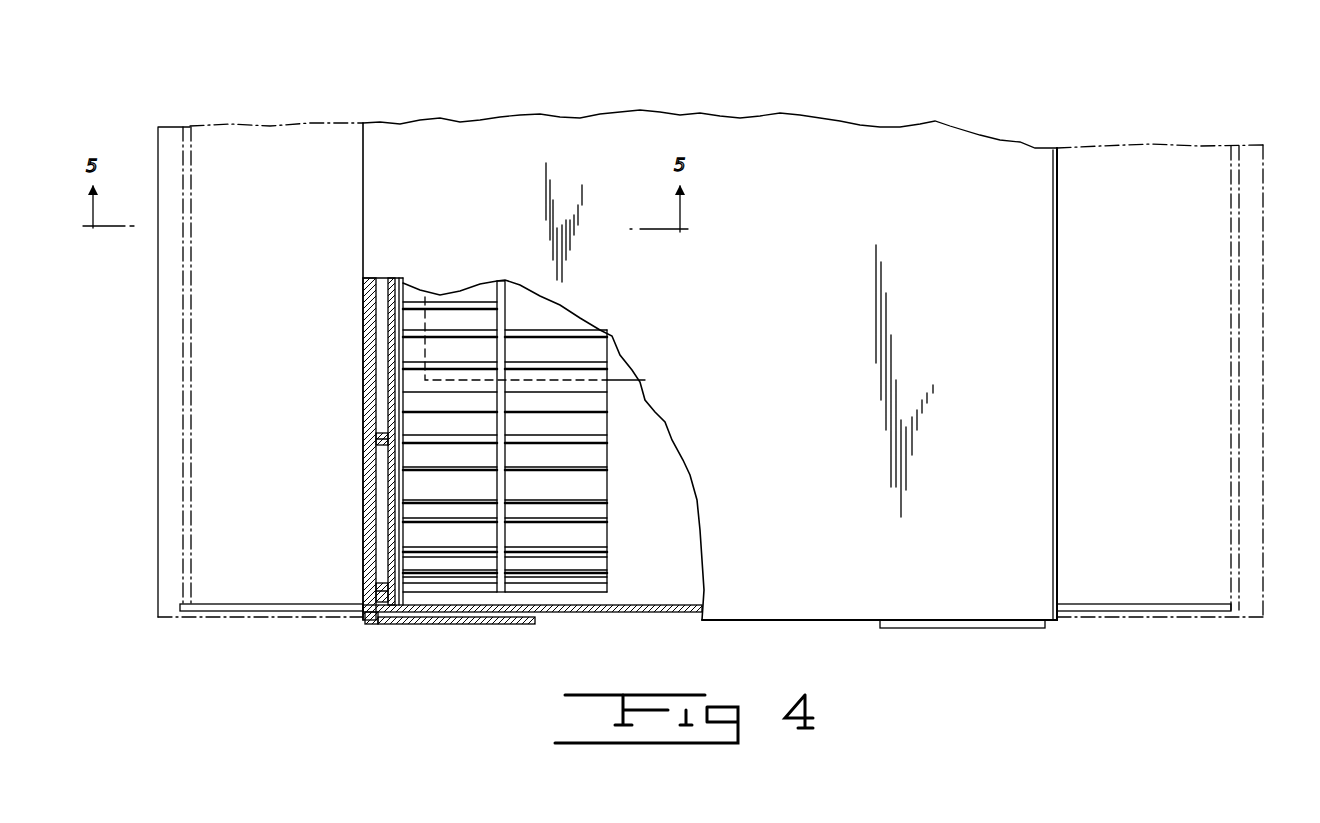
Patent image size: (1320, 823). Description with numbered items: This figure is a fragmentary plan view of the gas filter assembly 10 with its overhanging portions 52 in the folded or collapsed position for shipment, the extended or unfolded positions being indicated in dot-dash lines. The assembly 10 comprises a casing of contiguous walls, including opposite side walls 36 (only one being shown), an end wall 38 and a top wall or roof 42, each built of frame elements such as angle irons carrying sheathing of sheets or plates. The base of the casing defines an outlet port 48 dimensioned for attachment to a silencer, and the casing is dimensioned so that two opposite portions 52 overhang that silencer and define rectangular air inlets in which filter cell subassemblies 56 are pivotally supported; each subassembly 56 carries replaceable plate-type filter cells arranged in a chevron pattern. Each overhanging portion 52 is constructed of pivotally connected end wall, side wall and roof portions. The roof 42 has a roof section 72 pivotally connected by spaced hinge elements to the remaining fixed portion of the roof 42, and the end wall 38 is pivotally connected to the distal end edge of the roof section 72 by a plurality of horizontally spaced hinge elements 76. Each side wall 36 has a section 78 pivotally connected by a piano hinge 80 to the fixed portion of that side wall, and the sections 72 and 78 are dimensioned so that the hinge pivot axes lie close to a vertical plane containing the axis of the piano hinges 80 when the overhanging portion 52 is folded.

The gas filter assembly 10 is at (1009, 112).
The side wall 36 is at (672, 613).
The end wall 38 is at (395, 346).
The roof 42 is at (800, 140).
The outlet port 48 is at (662, 530).
The overhanging portion 52 is at (1126, 133).
The filter cell subassembly 56 is at (566, 585).
The roof section 72 is at (272, 122).
The hinge element 76 is at (383, 452).
The side wall section 78 is at (255, 618).
The piano hinge 80 is at (372, 625).